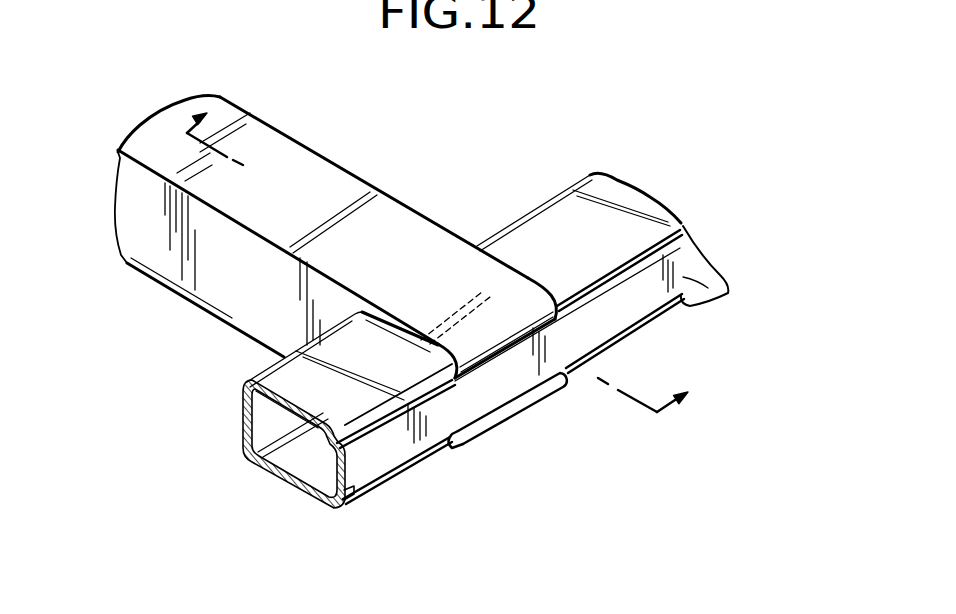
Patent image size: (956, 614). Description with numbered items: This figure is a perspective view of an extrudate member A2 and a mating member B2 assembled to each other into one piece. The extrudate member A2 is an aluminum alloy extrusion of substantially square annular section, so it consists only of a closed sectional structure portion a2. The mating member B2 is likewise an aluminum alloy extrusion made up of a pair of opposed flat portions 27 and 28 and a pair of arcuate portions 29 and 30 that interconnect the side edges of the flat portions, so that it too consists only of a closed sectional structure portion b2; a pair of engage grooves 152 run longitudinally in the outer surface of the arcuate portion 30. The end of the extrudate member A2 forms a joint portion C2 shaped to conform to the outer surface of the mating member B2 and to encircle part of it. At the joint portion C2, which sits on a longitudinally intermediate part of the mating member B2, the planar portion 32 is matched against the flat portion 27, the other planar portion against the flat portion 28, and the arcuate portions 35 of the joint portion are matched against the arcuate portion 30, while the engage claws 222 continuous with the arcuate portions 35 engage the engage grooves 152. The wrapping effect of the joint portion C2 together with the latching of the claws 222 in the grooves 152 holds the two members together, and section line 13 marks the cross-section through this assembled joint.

The extrudate member A2 is at (347, 162).
The closed sectional structure portion a2 is at (199, 305).
The mating member B2 is at (520, 208).
The closed sectional structure portion b2 is at (272, 480).
The joint portion C2 is at (517, 267).
The section line 13- 13 is at (414, 291).
The flat portion 27 is at (287, 386).
The flat portion 28 is at (311, 478).
The arcuate portion 29 is at (240, 433).
The arcuate portion 30 is at (728, 292).
The planar portion 32 is at (477, 290).
The arcuate portions 35 is at (497, 360).
The engage grooves 152 is at (358, 496).
The engage claws 222 is at (447, 390).